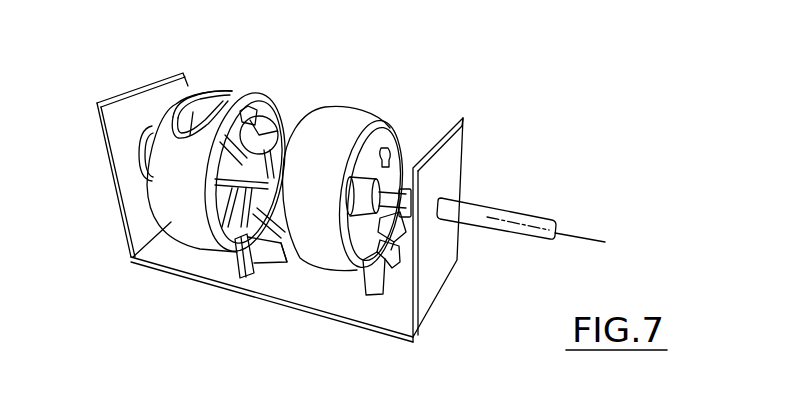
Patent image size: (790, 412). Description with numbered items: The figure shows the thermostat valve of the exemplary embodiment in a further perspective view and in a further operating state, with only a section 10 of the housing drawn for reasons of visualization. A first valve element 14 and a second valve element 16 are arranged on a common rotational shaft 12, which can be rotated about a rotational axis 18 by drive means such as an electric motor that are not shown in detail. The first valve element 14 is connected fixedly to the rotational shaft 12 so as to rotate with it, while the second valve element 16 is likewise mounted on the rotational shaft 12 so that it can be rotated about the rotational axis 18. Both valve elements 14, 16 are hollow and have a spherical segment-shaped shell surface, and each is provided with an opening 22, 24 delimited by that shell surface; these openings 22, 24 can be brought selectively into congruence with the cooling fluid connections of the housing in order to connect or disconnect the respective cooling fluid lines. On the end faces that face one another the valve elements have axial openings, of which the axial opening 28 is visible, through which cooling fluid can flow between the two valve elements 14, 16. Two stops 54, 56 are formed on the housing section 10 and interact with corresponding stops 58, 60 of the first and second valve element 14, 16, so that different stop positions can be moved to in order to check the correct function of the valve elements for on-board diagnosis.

The housing section 10 is at (163, 255).
The rotational shaft 12 is at (505, 213).
The first valve element 14 is at (335, 122).
The second valve element 16 is at (168, 183).
The rotational axis 18 is at (595, 240).
The opening 22 is at (392, 148).
The opening 24 is at (225, 90).
The axial opening 28 is at (263, 133).
The stop 54 is at (375, 287).
The stop 56 is at (240, 264).
The stop 58 is at (392, 246).
The stop 60 is at (253, 98).